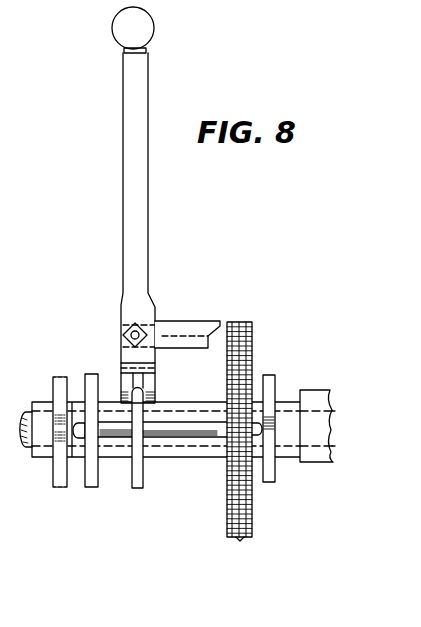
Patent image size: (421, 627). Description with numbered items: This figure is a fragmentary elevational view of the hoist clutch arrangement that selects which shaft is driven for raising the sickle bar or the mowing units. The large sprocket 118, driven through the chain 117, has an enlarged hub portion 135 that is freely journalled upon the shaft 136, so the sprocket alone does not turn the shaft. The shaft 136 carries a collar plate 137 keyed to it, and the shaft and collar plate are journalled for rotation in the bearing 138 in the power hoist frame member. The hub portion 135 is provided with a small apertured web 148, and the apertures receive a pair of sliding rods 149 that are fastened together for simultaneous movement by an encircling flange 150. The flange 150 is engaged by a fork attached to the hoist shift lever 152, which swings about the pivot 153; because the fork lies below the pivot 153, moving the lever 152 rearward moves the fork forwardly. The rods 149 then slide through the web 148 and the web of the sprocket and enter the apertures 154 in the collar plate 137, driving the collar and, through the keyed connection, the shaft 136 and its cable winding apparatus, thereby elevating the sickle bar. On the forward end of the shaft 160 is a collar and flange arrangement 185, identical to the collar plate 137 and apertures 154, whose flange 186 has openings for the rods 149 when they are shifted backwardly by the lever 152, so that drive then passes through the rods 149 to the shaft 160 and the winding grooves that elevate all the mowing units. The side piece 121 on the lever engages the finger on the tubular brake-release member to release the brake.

The hoist shift lever 152 is at (138, 174).
The pivot 153 is at (132, 334).
The side piece 121 is at (180, 324).
The collar and flange arrangement 185 is at (62, 380).
The flange 186 is at (57, 424).
The shaft 160 is at (25, 453).
The web 148 is at (95, 487).
The sliding rods 149 is at (117, 438).
The encircling flange 150 is at (138, 488).
The shaft 136 is at (190, 443).
The enlarged hub portion 135 is at (217, 457).
The large sprocket 118 is at (240, 539).
The chain 117 is at (252, 513).
The collar plate 137 is at (275, 482).
The apertures 154 is at (275, 427).
The bearing 138 is at (323, 400).